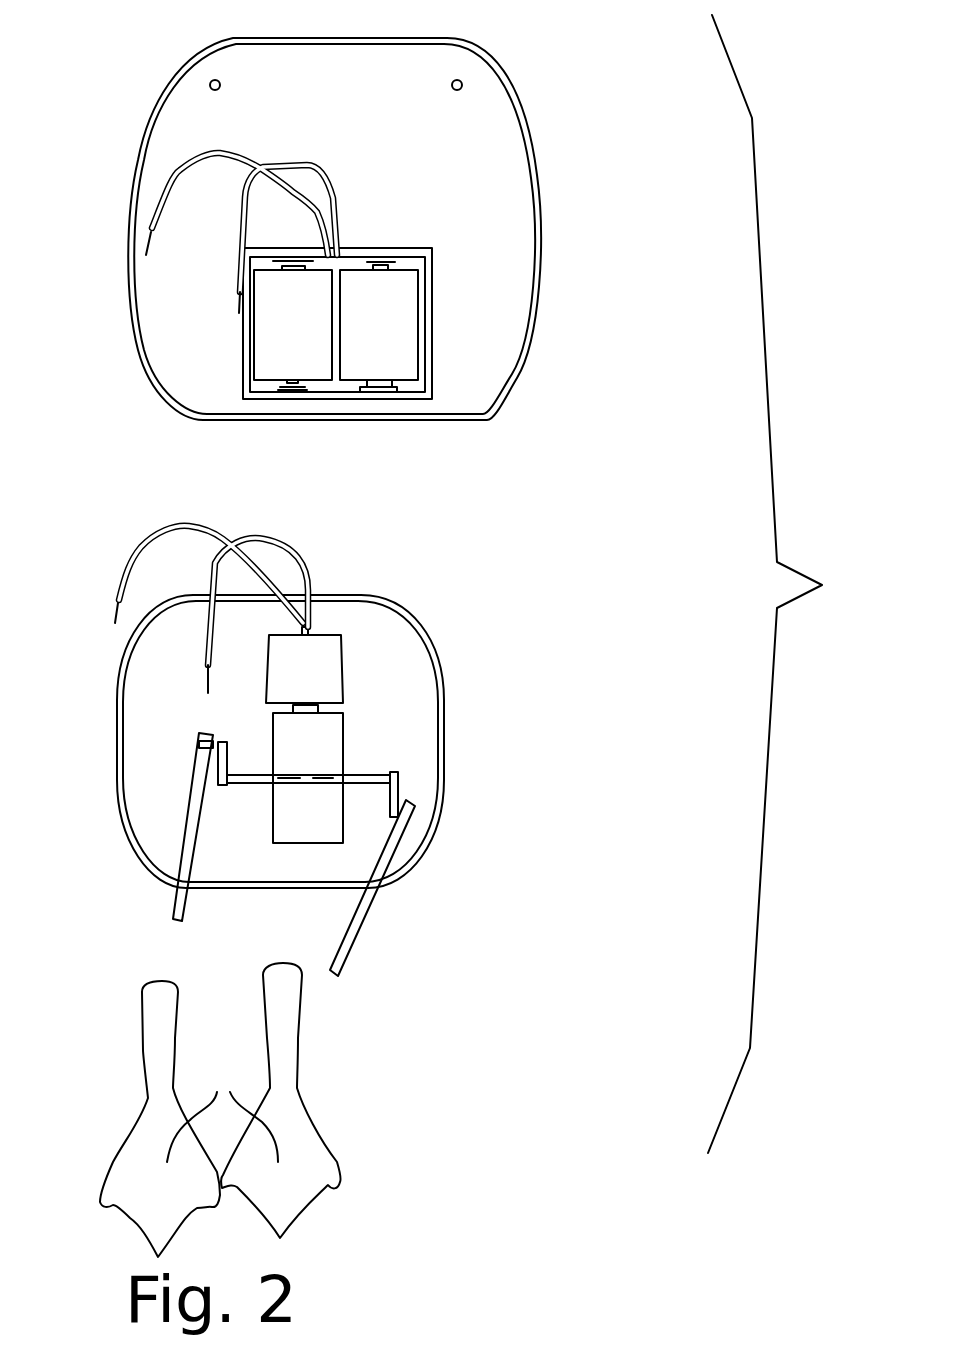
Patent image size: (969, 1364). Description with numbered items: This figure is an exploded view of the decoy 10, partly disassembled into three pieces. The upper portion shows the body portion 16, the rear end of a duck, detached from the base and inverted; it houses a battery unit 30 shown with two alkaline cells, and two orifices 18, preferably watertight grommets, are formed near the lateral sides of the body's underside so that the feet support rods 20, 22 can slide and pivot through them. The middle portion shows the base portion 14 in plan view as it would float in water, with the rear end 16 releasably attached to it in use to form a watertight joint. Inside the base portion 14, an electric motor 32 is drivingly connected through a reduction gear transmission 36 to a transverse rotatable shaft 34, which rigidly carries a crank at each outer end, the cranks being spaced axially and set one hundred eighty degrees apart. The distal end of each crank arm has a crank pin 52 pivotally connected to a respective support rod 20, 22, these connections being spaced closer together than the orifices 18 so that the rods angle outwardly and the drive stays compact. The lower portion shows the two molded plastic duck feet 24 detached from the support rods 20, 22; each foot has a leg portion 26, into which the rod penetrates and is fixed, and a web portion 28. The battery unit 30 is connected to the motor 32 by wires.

The decoy 10 is at (788, 584).
The base portion 14 is at (236, 778).
The body portion 16 is at (118, 207).
The orifices 18 is at (210, 81).
The feet support rod 20 is at (177, 867).
The feet support rod 22 is at (348, 939).
The duck feet 24 is at (181, 1110).
The leg portions 26 is at (285, 1005).
The web portions 28 is at (222, 1111).
The battery unit 30 is at (242, 322).
The electric motor 32 is at (295, 657).
The transverse rotatable shaft 34 is at (362, 775).
The reduction gear transmission 36 is at (270, 743).
The crank pin 52 is at (219, 742).